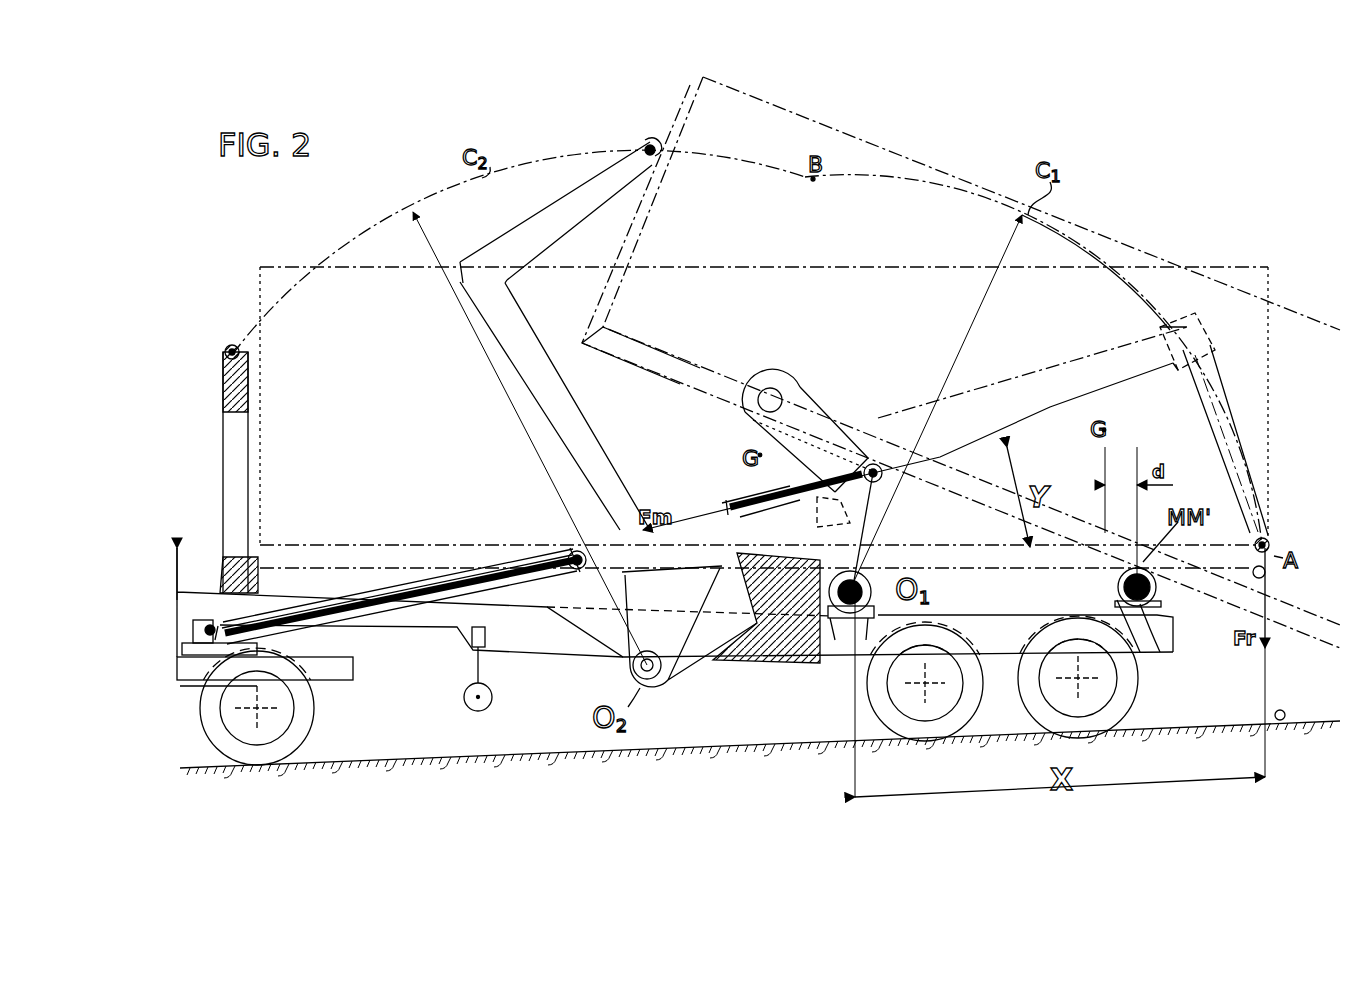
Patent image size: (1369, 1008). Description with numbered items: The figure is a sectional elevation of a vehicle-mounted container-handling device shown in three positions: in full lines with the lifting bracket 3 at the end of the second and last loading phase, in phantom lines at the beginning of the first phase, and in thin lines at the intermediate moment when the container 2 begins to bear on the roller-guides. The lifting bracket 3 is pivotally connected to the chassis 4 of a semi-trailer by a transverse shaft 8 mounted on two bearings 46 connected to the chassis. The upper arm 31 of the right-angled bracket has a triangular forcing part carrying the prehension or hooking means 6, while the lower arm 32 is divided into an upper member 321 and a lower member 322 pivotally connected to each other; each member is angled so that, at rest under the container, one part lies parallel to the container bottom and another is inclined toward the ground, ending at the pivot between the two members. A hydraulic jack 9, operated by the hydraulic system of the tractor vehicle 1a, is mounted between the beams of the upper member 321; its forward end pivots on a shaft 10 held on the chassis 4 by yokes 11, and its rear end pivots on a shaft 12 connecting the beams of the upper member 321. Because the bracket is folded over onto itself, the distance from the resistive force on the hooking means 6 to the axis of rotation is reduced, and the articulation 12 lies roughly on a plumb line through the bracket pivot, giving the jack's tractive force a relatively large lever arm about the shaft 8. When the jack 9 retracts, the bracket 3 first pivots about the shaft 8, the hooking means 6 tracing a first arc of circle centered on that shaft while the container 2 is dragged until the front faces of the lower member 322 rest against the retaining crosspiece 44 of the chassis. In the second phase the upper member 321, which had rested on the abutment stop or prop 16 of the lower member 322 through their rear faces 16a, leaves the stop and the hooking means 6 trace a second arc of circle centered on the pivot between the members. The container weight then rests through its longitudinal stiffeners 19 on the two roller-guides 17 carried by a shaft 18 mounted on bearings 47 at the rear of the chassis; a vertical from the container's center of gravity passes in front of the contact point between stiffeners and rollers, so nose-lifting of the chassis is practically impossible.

The tractor vehicle 1a is at (332, 670).
The container 2 is at (873, 158).
The lifting bracket 3 is at (1193, 320).
The chassis 4 is at (540, 630).
The prehension or hooking means 6 is at (232, 350).
The shaft 8 is at (847, 617).
The hydraulic jack 9 is at (410, 600).
The shaft 10 is at (210, 628).
The yokes 11 is at (185, 683).
The shaft 12 is at (876, 470).
The abutment stop or prop 16 is at (866, 503).
The rear faces 16a is at (850, 470).
The roller-guides 17 is at (1160, 585).
The shaft 18 is at (1149, 650).
The longitudinal stiffeners 19 is at (1090, 540).
The upper arm 31 is at (560, 207).
The lower arm 32 is at (1010, 395).
The retaining crosspiece 44 is at (767, 660).
The bearings 46 is at (860, 653).
The bearings 47 is at (1127, 667).
The upper member 321 is at (1085, 375).
The lower member 322 is at (790, 478).